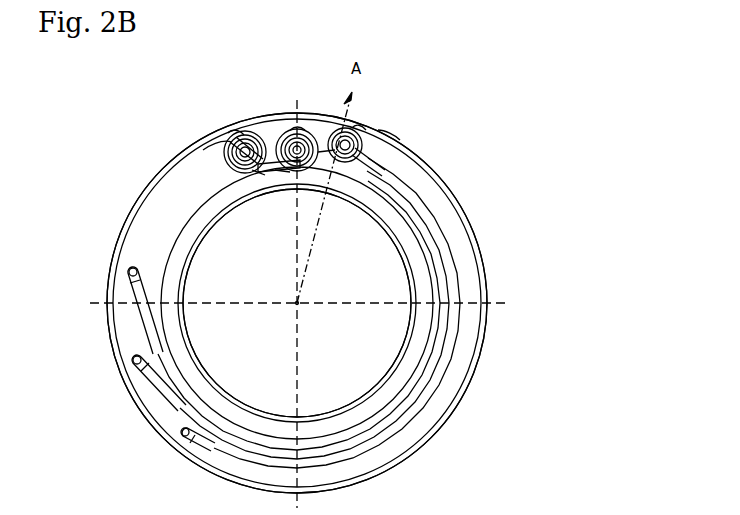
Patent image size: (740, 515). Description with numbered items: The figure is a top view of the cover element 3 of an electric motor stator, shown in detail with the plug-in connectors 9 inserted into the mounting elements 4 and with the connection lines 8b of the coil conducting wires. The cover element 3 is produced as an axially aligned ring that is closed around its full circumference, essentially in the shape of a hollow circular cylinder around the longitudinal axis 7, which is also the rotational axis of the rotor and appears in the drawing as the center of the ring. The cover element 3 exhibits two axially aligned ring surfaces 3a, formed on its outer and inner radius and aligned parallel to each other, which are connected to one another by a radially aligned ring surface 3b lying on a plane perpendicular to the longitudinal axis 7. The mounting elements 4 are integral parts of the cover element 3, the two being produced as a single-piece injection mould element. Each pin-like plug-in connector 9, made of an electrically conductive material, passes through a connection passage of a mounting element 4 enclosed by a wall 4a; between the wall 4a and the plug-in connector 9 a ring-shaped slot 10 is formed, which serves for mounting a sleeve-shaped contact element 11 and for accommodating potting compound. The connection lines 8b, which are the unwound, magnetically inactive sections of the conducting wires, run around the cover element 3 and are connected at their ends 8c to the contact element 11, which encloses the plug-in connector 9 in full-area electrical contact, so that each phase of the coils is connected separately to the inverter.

The cover element 3 is at (445, 169).
The axial ring surface 3a is at (140, 197).
The radial ring surface 3b is at (150, 258).
The mounting element 4 is at (290, 109).
The wall 4a is at (340, 127).
The longitudinal axis 7 is at (282, 295).
The connection line 8b is at (418, 218).
The end 8c is at (203, 150).
The plug-in connector 9 is at (228, 133).
The slot 10 is at (256, 172).
The contact element 11 is at (280, 170).